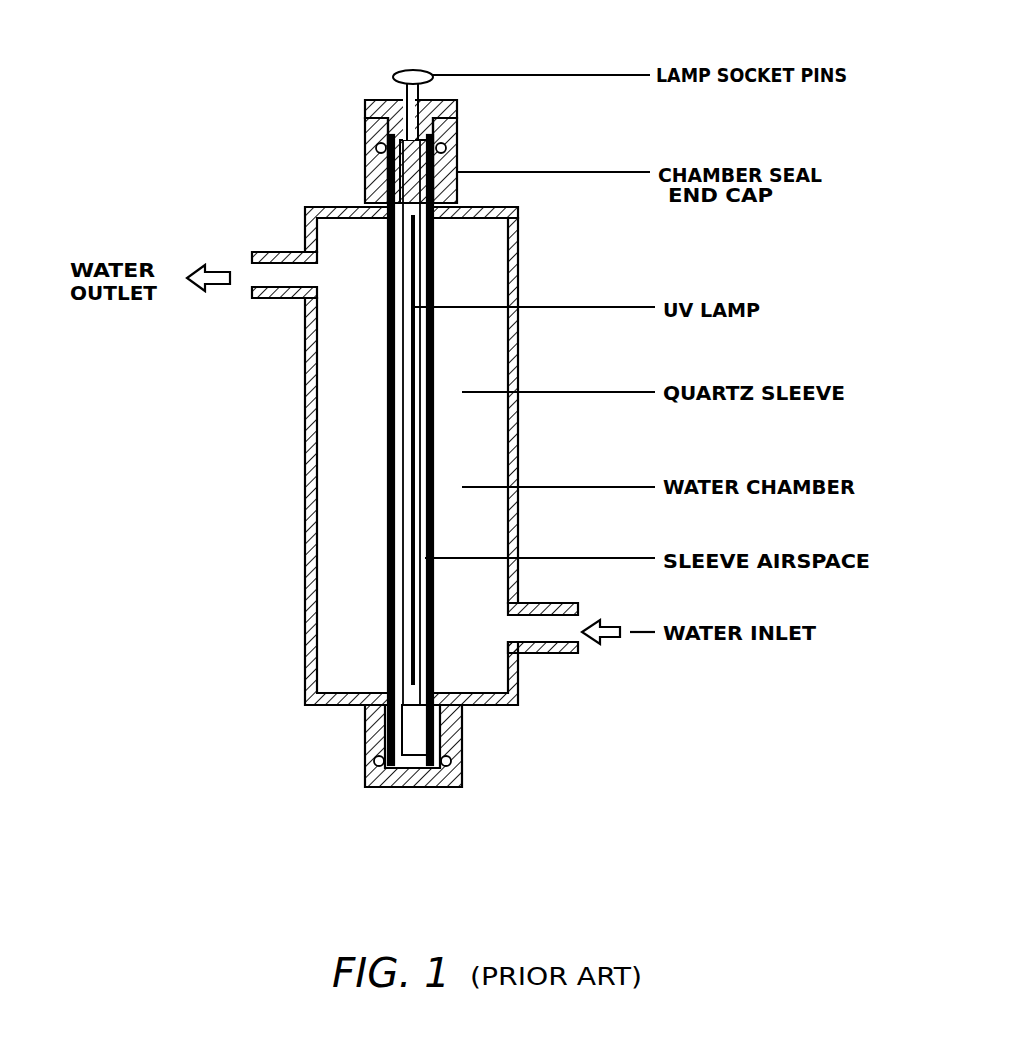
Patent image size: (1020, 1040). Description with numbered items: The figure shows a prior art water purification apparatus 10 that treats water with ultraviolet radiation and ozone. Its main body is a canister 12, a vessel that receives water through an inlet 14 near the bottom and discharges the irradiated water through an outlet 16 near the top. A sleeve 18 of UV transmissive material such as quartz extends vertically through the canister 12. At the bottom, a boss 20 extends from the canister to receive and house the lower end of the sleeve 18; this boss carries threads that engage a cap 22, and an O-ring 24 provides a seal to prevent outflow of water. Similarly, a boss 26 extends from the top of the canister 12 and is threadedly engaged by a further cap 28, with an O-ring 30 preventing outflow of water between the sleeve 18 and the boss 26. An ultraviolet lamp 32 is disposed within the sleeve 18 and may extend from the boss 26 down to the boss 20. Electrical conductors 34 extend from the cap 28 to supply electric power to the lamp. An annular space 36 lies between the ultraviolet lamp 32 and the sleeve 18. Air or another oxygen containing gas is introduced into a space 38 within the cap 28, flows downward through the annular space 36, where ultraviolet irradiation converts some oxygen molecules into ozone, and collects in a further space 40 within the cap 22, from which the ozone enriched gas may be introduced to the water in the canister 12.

The water purification apparatus 10 is at (630, 773).
The canister 12 is at (305, 530).
The inlet 14 is at (550, 655).
The outlet 16 is at (275, 300).
The sleeve 18 is at (426, 450).
The boss 20 is at (365, 712).
The cap 22 is at (462, 777).
The O-ring 24 is at (365, 782).
The boss 26 is at (365, 172).
The cap 28 is at (365, 102).
The O-ring 30 is at (457, 142).
The ultraviolet lamp 32 is at (430, 415).
The electrical conductors 34 is at (420, 70).
The annular space 36 is at (400, 500).
The space 38 is at (455, 100).
The space 40 is at (420, 787).